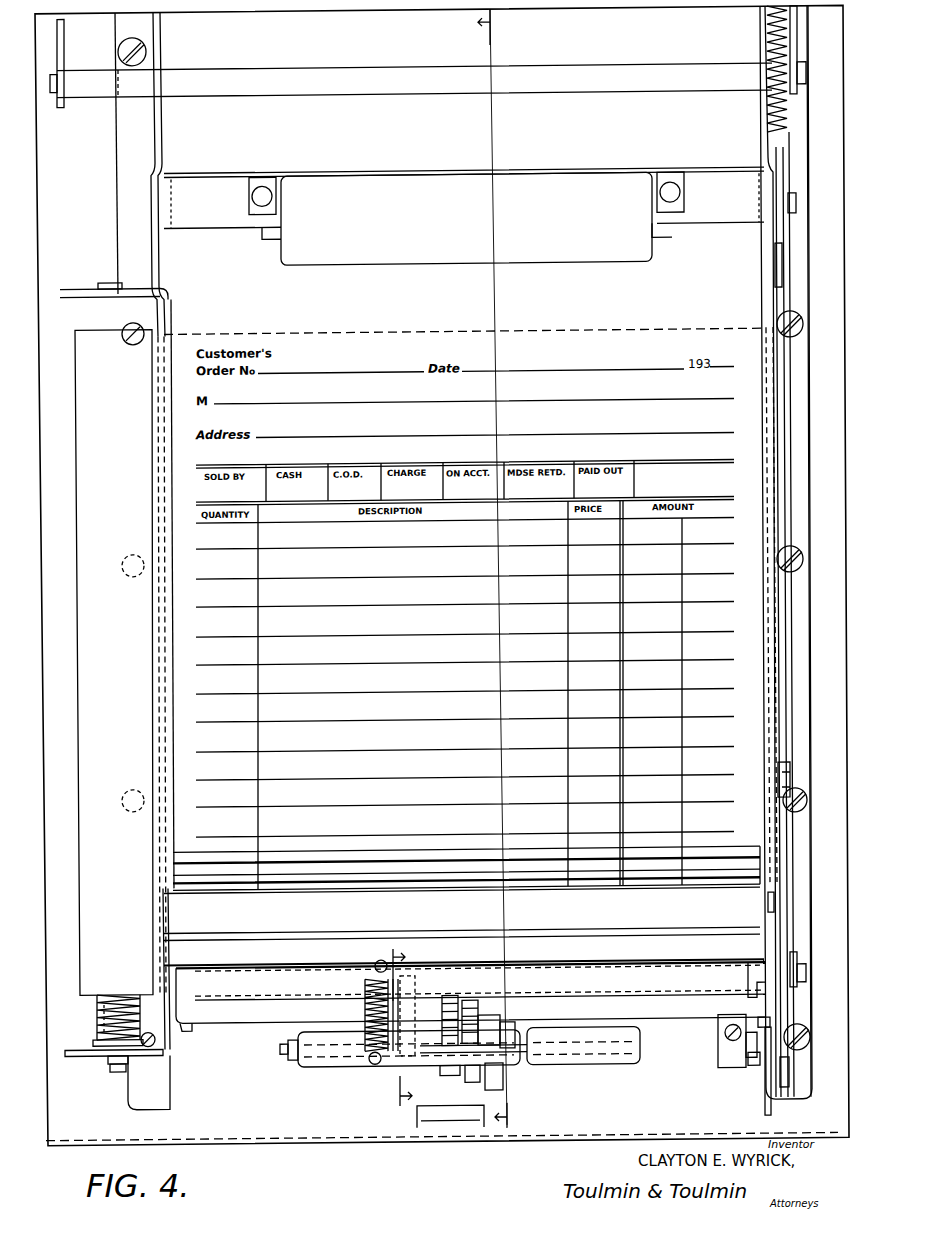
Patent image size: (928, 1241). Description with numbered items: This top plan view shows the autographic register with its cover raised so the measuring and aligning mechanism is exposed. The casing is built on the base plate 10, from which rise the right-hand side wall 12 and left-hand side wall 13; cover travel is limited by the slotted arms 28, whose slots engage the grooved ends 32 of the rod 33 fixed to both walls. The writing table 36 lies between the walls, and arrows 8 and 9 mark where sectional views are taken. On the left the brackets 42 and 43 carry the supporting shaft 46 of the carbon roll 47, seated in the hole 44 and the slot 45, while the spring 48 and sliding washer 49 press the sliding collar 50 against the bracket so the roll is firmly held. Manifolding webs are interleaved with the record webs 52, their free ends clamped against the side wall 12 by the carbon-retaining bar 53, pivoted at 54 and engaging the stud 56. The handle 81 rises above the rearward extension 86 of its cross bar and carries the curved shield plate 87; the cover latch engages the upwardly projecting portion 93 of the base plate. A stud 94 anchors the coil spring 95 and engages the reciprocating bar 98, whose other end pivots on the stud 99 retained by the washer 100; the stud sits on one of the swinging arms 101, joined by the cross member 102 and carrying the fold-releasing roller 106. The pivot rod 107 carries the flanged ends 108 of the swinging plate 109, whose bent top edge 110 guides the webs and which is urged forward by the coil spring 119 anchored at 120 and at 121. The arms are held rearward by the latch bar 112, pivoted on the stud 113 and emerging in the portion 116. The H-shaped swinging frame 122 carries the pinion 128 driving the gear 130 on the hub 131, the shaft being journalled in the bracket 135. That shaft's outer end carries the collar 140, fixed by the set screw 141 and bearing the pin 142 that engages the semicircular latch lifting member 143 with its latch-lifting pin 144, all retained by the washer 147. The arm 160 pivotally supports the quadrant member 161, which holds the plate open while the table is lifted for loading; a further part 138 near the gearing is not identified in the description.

The section line 8- 8 is at (499, 568).
The section line 9- 9 is at (396, 1027).
The base plate 10 is at (94, 206).
The side wall 12 is at (778, 258).
The side wall 13 is at (172, 1050).
The slotted arms 28 is at (60, 40).
The grooved ends 32 is at (56, 72).
The rod 33 is at (318, 66).
The writing table 36 is at (278, 904).
The bracket 42 is at (70, 290).
The hole 44 is at (108, 280).
The carbon roll 47 is at (76, 506).
The spring 48 is at (97, 1014).
The sliding washer 49 is at (100, 1030).
The sliding collar 50 is at (93, 1040).
The bracket 43 is at (70, 1054).
The slot 45 is at (110, 1060).
The supporting shaft 46 is at (118, 1068).
The record webs 52 is at (357, 893).
The carbon-retaining bar 53 is at (775, 362).
The pivot 54 is at (781, 1090).
The stud 56 is at (782, 280).
The handle 81 is at (431, 172).
The rearward extension 86 is at (265, 240).
The curved shield plate 87 is at (358, 250).
The upwardly projecting portion 93 is at (446, 1128).
The stud 94 is at (796, 205).
The coil spring 95 is at (788, 126).
The reciprocating bar 98 is at (783, 388).
The stud 99 is at (806, 971).
The washer 100 is at (795, 962).
The swinging arms 101 is at (183, 1028).
The cross member 102 is at (218, 966).
The roller 106 is at (250, 997).
The pivot rod 107 is at (288, 1050).
The flanged ends 108 is at (284, 1043).
The swinging plate 109 is at (450, 995).
The angularly bent top edge portion 110 is at (348, 1048).
The latch bar 112 is at (776, 907).
The stud 113 is at (790, 775).
The portion 116 is at (765, 1110).
The coil spring 119 is at (366, 1010).
The anchorage 120 is at (373, 1064).
The anchorage 121 is at (369, 959).
The H-shaped swinging frame 122 is at (438, 1050).
The pinion 128 is at (486, 1024).
The gear 130 is at (471, 1000).
The hub 131 is at (508, 1026).
The bracket 135 is at (698, 1010).
The ratchet 138 is at (472, 1082).
The collar 140 is at (728, 1017).
The set screw 141 is at (718, 1042).
The pin 142 is at (752, 1068).
The semicircular latch lifting member 143 is at (740, 1044).
The latch-lifting pin 144 is at (770, 1025).
The washer 147 is at (783, 1040).
The arm 160 is at (412, 1000).
The quadrant member 161 is at (405, 1030).